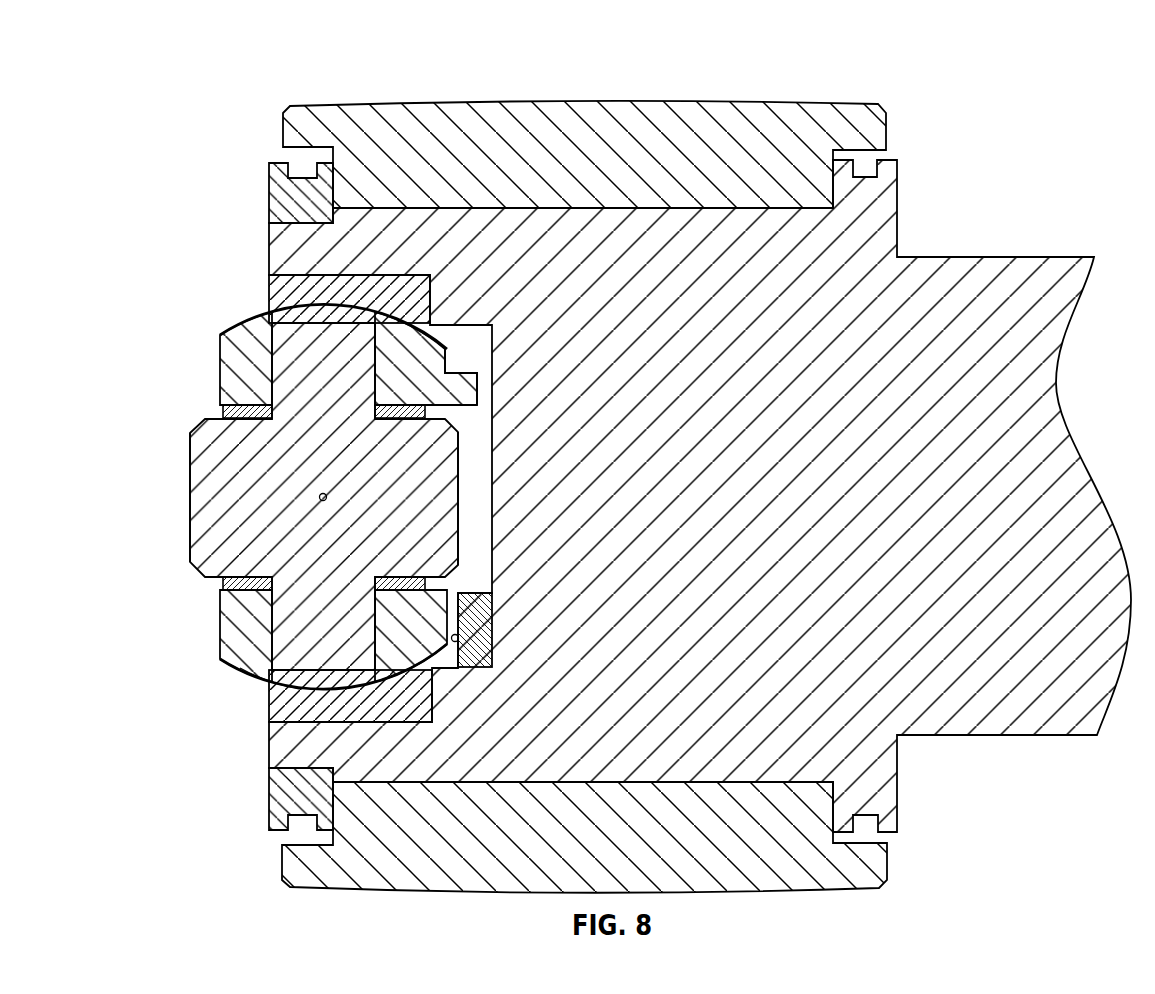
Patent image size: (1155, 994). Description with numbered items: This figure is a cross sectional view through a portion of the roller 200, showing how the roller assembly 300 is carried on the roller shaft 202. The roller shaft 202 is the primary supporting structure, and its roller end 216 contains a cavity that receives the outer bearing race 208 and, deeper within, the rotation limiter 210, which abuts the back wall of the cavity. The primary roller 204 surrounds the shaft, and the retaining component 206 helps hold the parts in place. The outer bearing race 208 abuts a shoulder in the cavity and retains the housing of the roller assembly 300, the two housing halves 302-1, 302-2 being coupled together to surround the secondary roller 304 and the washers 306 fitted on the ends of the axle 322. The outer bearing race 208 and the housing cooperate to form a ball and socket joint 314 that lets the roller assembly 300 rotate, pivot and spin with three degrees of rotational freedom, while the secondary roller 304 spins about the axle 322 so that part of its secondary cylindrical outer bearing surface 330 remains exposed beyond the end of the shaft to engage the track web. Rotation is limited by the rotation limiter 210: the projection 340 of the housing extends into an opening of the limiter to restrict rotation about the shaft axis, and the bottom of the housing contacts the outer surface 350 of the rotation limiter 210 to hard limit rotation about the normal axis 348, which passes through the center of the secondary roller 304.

The roller 200 is at (185, 47).
The roller shaft 202 is at (1055, 738).
The primary roller 204 is at (785, 104).
The retaining component 206 is at (268, 196).
The outer bearing race 208 is at (386, 275).
The rotation limiter 210 is at (458, 634).
The roller end 216 is at (737, 287).
The roller assembly 300 is at (212, 361).
The housing 302-1 is at (218, 329).
The housing 302-2 is at (448, 337).
The secondary roller 304 is at (396, 482).
The washers 306 is at (217, 409).
The ball and socket joint 314 is at (257, 689).
The axle 322 is at (300, 345).
The secondary cylindrical outer bearing surface 330 is at (190, 470).
The projection 340 is at (470, 372).
The normal axis 348 is at (320, 494).
The outer surface 350 is at (463, 643).